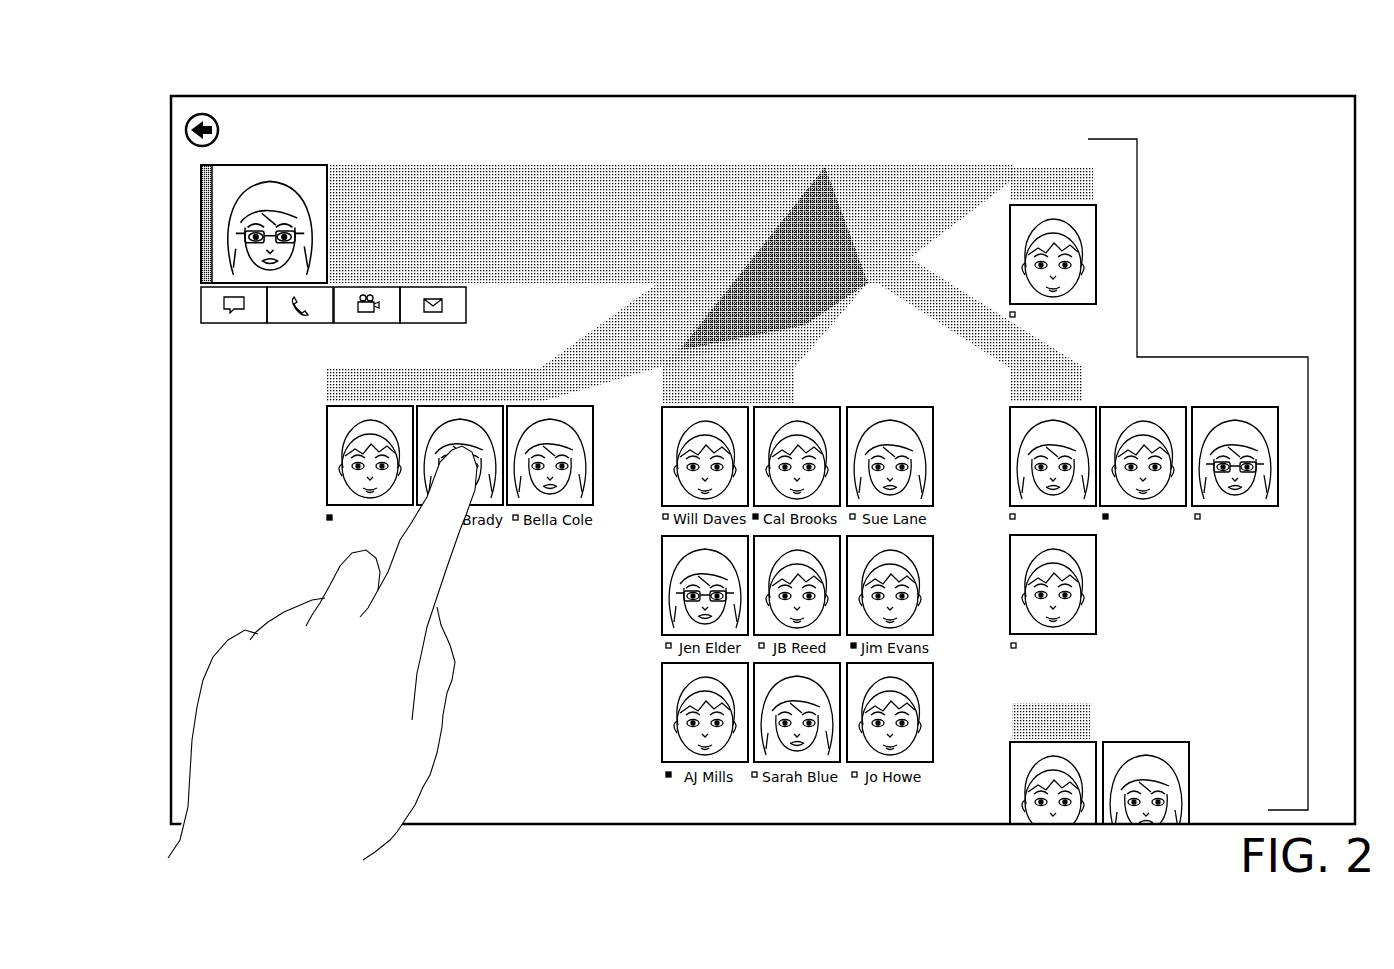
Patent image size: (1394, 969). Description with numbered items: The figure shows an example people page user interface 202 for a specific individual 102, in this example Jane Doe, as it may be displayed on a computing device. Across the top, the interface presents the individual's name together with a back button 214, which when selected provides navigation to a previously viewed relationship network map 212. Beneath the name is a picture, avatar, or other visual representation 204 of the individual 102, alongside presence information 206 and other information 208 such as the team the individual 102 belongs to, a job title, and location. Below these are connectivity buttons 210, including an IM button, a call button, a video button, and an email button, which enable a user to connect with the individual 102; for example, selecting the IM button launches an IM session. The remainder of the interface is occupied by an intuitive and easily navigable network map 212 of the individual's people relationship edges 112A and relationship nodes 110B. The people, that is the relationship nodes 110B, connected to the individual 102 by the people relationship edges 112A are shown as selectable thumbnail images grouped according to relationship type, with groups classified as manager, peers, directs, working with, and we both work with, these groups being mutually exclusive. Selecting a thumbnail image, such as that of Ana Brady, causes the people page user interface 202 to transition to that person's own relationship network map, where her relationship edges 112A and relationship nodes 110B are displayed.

The individual 102 is at (229, 113).
The people page user interface 202 is at (1258, 93).
The visual representation 204 is at (215, 178).
The presence information 206 is at (201, 208).
The other information 208 is at (447, 202).
The connectivity buttons 210 is at (201, 306).
The network map 212 is at (1137, 263).
The back button 214 is at (186, 129).
The relationship nodes 110B is at (333, 419).
The people relationship edges 112A is at (412, 354).